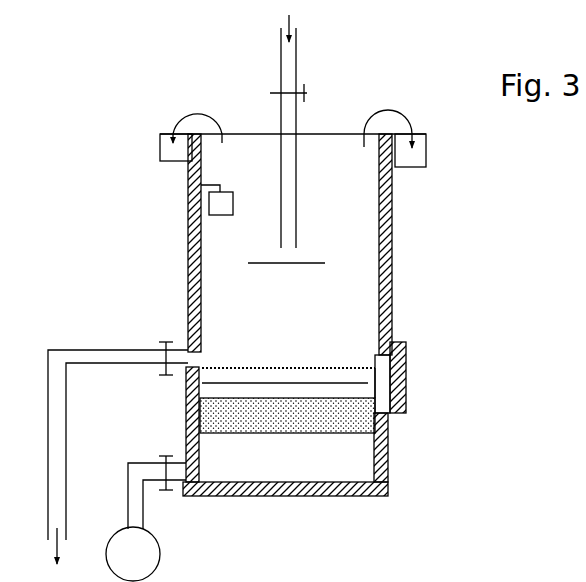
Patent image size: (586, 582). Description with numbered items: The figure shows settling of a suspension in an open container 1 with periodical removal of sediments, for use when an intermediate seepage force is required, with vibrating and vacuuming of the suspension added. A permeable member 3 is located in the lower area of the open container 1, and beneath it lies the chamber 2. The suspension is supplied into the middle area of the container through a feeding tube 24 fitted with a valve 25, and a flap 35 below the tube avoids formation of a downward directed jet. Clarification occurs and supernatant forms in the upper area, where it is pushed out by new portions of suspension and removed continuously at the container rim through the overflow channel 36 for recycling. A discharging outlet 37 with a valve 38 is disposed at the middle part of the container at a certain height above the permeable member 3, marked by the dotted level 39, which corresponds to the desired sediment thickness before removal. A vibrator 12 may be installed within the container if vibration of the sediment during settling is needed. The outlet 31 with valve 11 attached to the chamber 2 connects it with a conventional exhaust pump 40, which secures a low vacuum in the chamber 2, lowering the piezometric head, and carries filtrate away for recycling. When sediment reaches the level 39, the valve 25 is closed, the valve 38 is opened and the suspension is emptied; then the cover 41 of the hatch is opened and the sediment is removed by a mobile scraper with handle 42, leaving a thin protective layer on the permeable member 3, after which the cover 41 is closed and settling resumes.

The housing 1 is at (370, 240).
The chamber 2 is at (292, 477).
The permeable member 3 is at (385, 422).
The valve 11 is at (165, 448).
The vibrator 12 is at (192, 237).
The feeding tube 24 is at (287, 120).
The valve 25 is at (317, 90).
The tube (outlet) 31 is at (133, 498).
The flap 35 is at (317, 252).
The overflow channel 36 is at (162, 172).
The discharging outlet 37 is at (103, 348).
The valve 38 is at (165, 333).
The level 39 is at (288, 363).
The exhaust pump 40 is at (163, 568).
The cover of the hatch 41 is at (407, 370).
The scraper with handle 42 is at (320, 382).